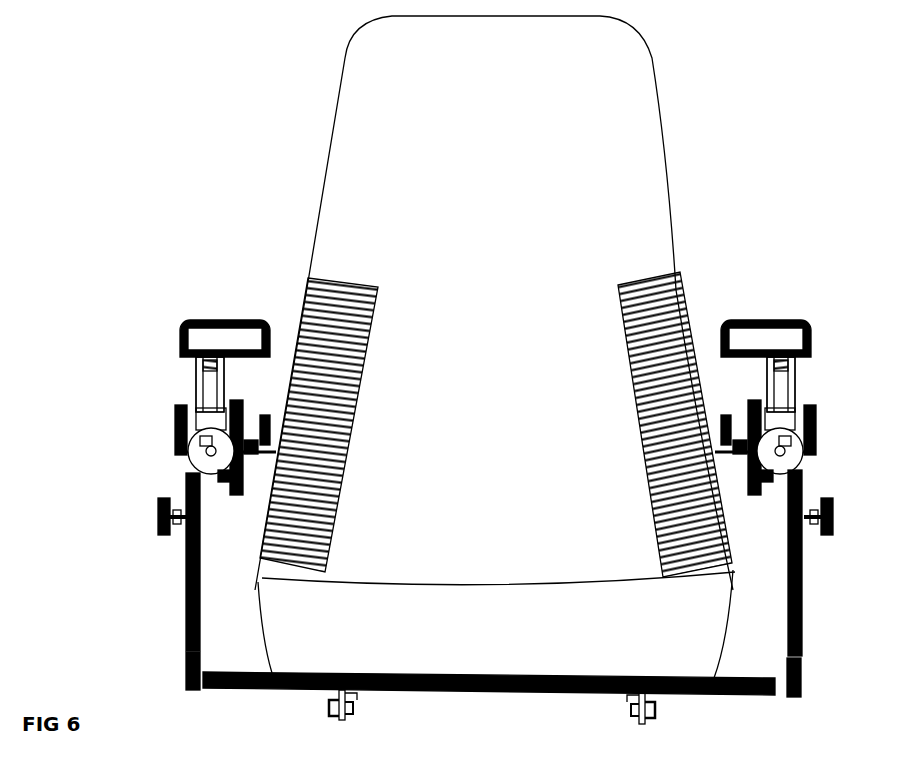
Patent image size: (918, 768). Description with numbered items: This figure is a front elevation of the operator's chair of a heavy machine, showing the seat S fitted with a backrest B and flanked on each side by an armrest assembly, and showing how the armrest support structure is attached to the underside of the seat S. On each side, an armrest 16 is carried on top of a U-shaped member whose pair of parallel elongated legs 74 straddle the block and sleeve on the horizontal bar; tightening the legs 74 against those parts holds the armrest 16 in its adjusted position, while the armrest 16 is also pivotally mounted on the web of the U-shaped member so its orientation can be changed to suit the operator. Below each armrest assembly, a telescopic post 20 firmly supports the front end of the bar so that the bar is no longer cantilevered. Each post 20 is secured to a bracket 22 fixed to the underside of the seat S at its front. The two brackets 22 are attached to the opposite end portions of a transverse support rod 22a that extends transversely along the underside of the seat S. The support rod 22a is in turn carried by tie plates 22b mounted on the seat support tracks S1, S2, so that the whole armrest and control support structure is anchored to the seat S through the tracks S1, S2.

The backrest B is at (372, 102).
The seat S is at (675, 637).
The armrest 16 is at (205, 320).
The parallel elongated legs 74 is at (198, 390).
The post 20 is at (185, 585).
The bracket 22 is at (186, 668).
The transverse support rod 22a is at (252, 688).
The tie plates 22b is at (365, 693).
The seat support track S1 is at (340, 690).
The seat support track S2 is at (650, 698).